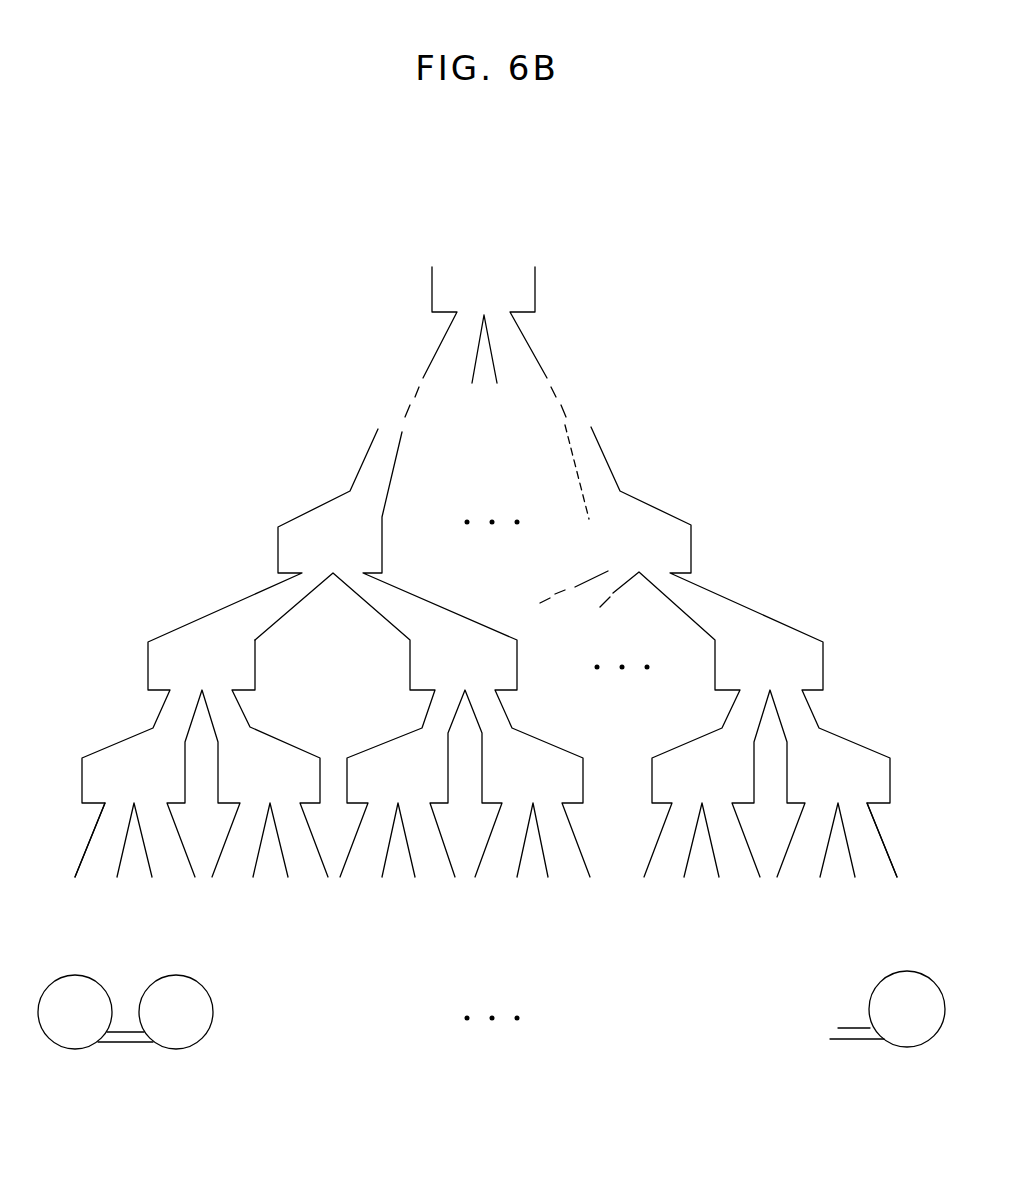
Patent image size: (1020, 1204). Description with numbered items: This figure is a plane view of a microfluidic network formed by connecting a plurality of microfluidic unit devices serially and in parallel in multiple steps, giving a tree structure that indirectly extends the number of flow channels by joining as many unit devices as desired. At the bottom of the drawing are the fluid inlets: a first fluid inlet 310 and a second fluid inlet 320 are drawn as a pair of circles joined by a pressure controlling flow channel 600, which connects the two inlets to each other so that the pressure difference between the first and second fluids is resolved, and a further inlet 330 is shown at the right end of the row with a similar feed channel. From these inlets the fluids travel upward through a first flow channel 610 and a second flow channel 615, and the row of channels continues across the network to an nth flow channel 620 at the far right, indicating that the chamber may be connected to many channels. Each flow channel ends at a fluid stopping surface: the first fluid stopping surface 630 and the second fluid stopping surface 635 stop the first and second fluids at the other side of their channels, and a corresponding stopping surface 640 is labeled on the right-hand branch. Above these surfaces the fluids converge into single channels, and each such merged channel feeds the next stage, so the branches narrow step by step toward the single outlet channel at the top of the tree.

The first fluid inlet 310 is at (75, 1050).
The second fluid inlet 320 is at (176, 1050).
The ring resonator 330 is at (907, 1047).
The pressure controlling flow channel 600 is at (123, 1045).
The first flow channel 610 is at (93, 870).
The second flow channel 615 is at (175, 868).
The nth flow channel 620 is at (883, 865).
The first fluid stopping surface 630 is at (120, 815).
The second fluid stopping surface 635 is at (158, 815).
The splitter branch 640 is at (855, 812).